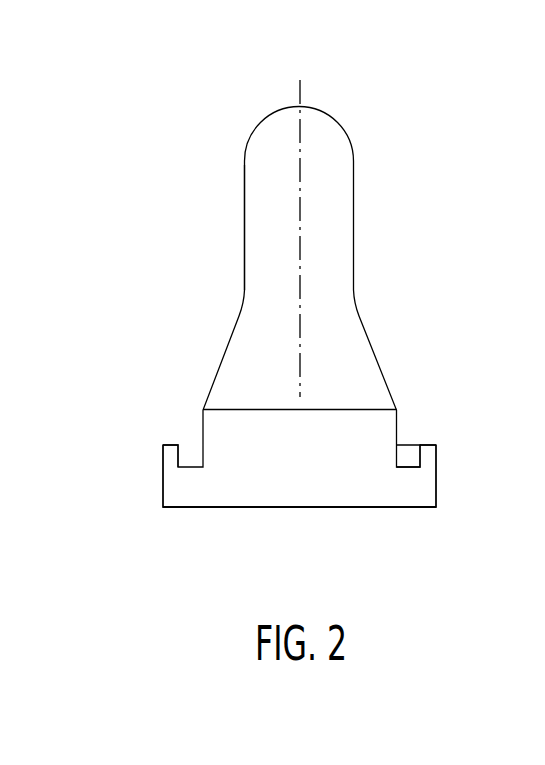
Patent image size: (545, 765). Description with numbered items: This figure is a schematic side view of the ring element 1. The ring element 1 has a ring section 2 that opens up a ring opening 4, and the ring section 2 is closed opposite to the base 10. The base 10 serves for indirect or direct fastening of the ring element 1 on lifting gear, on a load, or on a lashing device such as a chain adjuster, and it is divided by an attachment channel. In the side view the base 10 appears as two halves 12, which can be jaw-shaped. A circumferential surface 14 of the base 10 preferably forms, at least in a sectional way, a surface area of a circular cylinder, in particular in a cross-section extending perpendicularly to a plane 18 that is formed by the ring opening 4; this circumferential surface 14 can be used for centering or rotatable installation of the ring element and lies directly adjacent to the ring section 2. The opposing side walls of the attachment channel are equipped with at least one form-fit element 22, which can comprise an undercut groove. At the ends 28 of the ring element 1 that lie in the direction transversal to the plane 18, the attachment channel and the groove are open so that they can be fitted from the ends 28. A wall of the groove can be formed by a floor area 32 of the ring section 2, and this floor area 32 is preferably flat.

The ring element 1 is at (274, 286).
The ring section 2 is at (366, 251).
The ring opening 4 is at (241, 230).
The base 10 is at (450, 457).
The halves 12 is at (160, 515).
The circumferential surface 14 is at (366, 476).
The plane 18 is at (306, 90).
The form-fit element 22 is at (414, 440).
The ends 28 is at (145, 467).
The floor area 32 is at (283, 413).